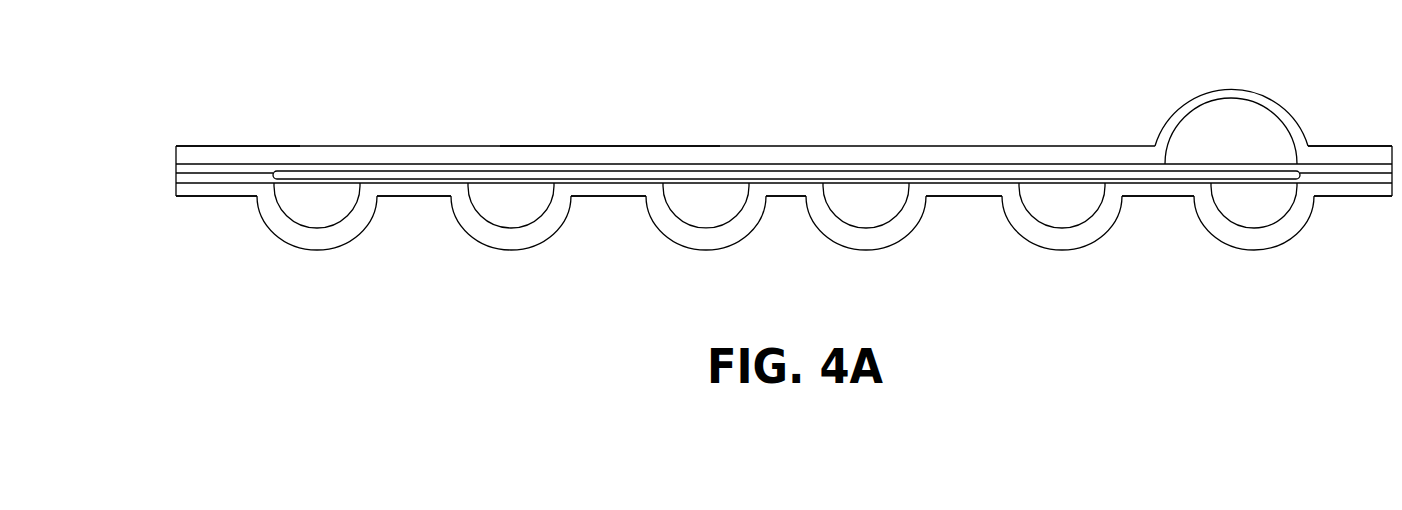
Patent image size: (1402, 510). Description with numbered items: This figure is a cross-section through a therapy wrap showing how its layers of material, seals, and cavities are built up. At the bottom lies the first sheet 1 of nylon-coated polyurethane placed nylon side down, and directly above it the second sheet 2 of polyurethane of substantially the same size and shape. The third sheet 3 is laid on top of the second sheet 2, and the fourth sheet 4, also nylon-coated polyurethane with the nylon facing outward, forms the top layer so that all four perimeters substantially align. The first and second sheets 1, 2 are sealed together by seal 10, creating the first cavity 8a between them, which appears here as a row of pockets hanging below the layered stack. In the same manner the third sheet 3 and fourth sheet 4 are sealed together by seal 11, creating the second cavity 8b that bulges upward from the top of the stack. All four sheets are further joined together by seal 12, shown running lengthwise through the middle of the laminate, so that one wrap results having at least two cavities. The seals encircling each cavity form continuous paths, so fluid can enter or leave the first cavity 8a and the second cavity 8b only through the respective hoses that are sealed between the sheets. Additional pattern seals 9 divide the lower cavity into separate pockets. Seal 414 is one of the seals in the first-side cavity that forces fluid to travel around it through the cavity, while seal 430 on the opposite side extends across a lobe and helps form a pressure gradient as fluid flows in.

The first sheet 1 is at (159, 204).
The second sheet 2 is at (156, 185).
The third sheet 3 is at (155, 167).
The fourth sheet 4 is at (157, 140).
The first cavity 8a is at (317, 215).
The second cavity 8b is at (1228, 107).
The pattern seals 9 is at (408, 203).
The seal between first and second sheets 10 is at (192, 205).
The seal between third and fourth sheets 11 is at (210, 140).
The seal of all four sheets 12 is at (232, 195).
The seal 414 is at (785, 201).
The seal 430 is at (610, 140).